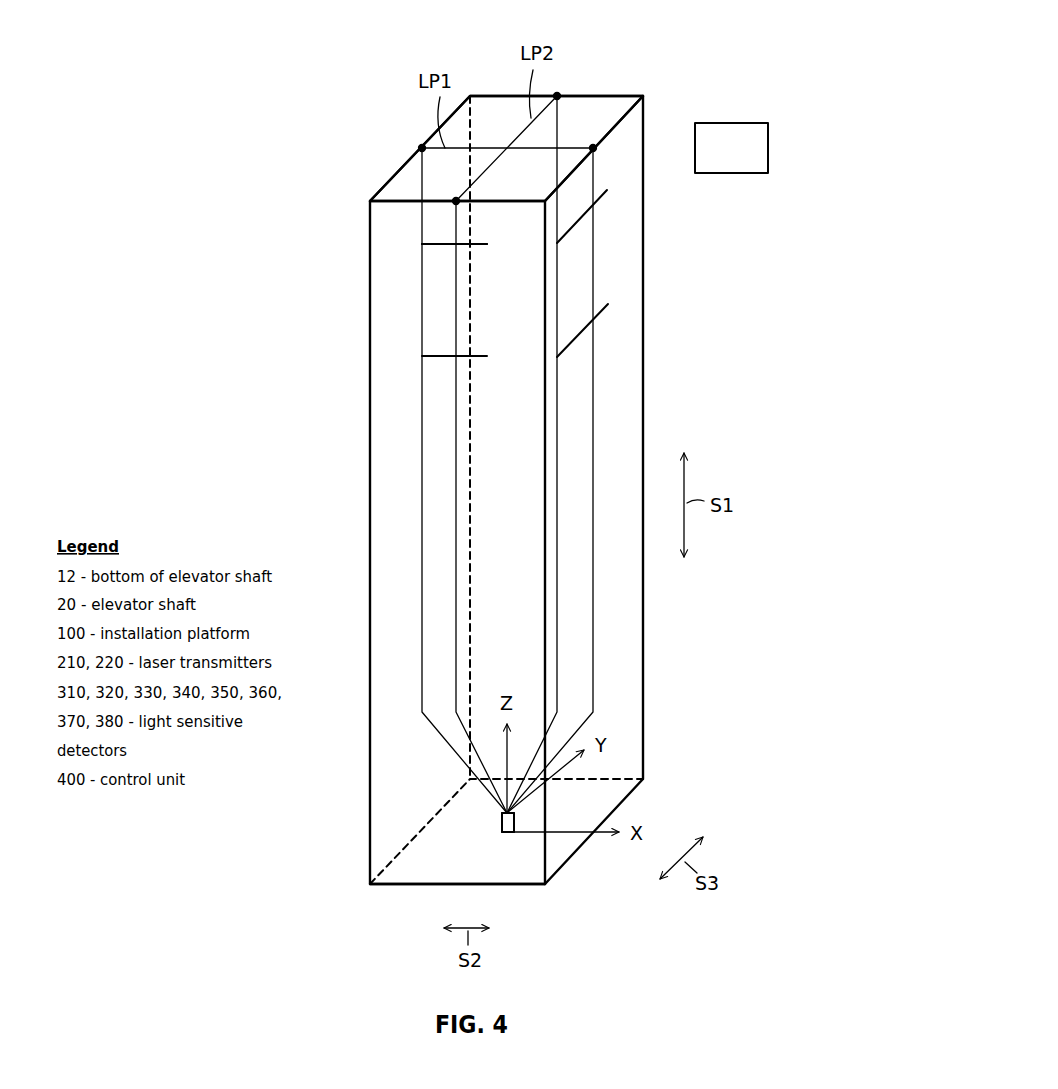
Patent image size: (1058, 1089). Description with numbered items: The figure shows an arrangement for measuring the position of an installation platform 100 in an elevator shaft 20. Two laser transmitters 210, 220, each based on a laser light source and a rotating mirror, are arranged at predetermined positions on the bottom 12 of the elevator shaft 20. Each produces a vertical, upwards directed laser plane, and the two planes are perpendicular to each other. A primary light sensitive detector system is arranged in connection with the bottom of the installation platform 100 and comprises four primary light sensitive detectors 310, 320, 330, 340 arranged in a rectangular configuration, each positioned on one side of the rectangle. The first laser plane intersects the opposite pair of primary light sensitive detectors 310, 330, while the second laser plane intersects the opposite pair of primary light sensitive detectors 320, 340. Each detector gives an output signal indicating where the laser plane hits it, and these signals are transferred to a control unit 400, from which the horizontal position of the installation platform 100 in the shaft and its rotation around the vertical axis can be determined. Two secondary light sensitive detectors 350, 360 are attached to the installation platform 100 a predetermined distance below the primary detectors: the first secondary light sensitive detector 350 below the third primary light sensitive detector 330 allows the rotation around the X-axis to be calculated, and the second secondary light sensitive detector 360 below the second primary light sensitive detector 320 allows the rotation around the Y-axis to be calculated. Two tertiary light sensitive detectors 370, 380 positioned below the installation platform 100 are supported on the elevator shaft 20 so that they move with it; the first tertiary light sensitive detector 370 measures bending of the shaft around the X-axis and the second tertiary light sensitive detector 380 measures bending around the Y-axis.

The bottom of the elevator shaft 12 is at (400, 878).
The elevator shaft 20 is at (377, 487).
The installation platform 100 is at (650, 75).
The laser transmitter 210 is at (503, 824).
The laser transmitter 220 is at (503, 824).
The first primary light sensitive detector 310 is at (400, 170).
The second primary light sensitive detector 320 is at (448, 245).
The third primary light sensitive detector 330 is at (621, 121).
The fourth primary light sensitive detector 340 is at (607, 93).
The first secondary light sensitive detector 350 is at (573, 232).
The second secondary light sensitive detector 360 is at (448, 245).
The first tertiary light sensitive detector 370 is at (573, 342).
The second tertiary light sensitive detector 380 is at (437, 357).
The control unit 400 is at (731, 148).